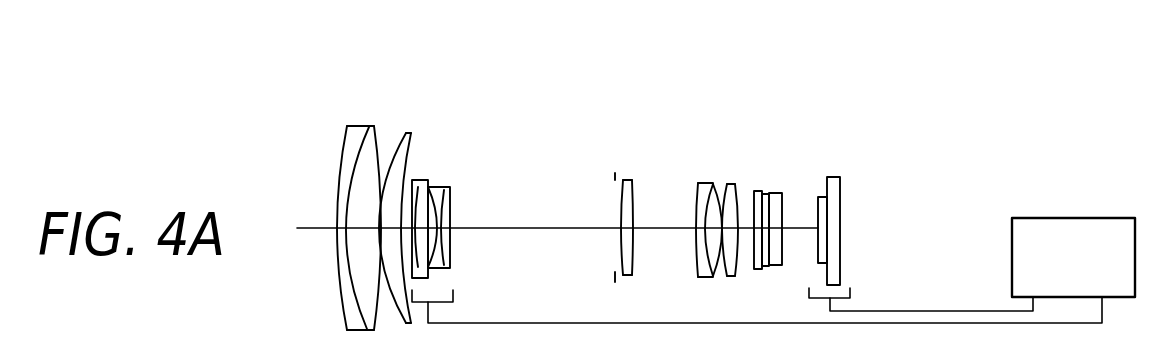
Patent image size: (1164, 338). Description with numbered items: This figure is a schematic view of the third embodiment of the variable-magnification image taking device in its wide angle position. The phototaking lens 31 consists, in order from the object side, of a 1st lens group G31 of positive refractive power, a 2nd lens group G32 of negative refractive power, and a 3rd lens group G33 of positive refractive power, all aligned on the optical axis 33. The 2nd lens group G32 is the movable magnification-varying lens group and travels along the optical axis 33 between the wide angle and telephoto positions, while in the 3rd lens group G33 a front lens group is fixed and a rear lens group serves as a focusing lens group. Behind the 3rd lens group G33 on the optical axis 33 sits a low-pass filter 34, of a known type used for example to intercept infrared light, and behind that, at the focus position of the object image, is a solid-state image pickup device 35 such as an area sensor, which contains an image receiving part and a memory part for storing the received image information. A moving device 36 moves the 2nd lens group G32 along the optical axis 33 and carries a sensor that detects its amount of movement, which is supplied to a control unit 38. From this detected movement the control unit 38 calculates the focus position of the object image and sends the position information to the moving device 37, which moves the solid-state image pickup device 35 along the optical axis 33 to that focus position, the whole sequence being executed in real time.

The phototaking lens 31 is at (333, 72).
The 1st lens group G31 is at (418, 121).
The 2nd lens group G32 is at (467, 173).
The 3rd lens group G33 is at (748, 168).
The optical axis 33 is at (518, 229).
The low-pass filter 34 is at (778, 194).
The solid-state image pickup device 35 is at (842, 188).
The moving device 36 is at (453, 291).
The moving device 37 is at (850, 288).
The control unit 38 is at (1093, 218).